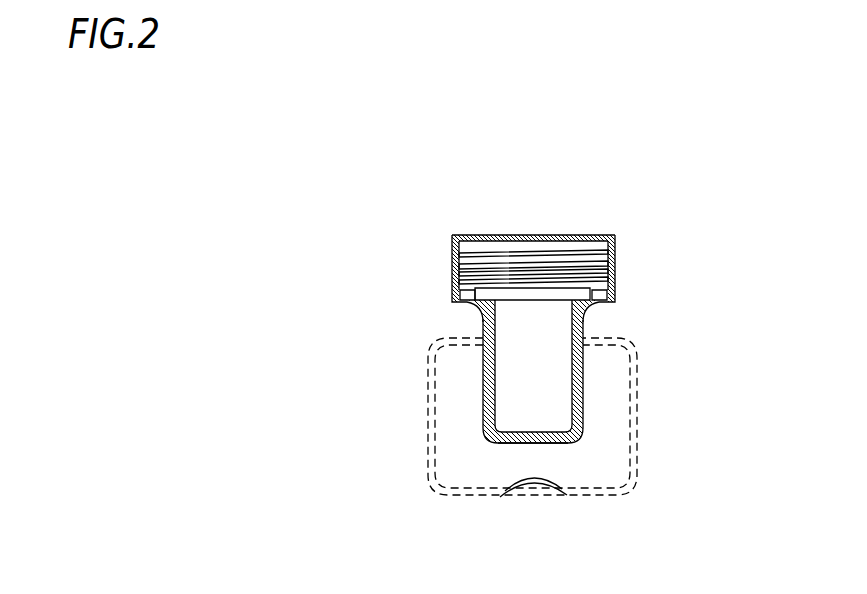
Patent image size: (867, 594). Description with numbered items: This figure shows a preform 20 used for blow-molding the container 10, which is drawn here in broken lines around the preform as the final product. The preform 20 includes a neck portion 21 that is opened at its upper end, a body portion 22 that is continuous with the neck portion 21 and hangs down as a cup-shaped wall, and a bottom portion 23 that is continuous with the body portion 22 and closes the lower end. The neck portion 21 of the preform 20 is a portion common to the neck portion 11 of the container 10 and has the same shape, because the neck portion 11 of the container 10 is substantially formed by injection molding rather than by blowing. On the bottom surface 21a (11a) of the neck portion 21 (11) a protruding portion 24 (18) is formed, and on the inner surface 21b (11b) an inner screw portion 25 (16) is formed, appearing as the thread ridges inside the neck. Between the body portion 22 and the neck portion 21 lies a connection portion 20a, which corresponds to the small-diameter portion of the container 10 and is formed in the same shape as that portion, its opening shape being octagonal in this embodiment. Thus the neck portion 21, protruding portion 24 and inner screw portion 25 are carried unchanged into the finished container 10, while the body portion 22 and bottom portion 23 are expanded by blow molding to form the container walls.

The container 10 is at (430, 445).
The preform 20 is at (530, 310).
The connection portion 20a is at (480, 322).
The neck portion 21 is at (524, 225).
The neck portion 11 is at (550, 225).
The bottom surface 21a is at (585, 261).
The bottom surface 11a is at (612, 268).
The inner surface 21b is at (501, 193).
The inner surface 11b is at (474, 236).
The body portion 22 is at (580, 386).
The bottom portion 23 is at (518, 445).
The protruding portion 24 is at (466, 286).
The protruding portion 18 is at (457, 287).
The inner screw portion 25 is at (533, 226).
The inner screw portion 16 is at (510, 250).